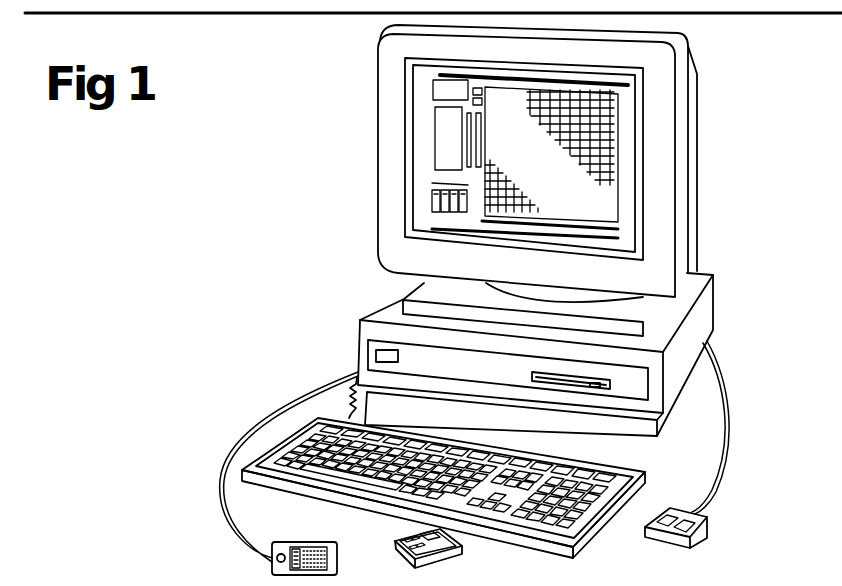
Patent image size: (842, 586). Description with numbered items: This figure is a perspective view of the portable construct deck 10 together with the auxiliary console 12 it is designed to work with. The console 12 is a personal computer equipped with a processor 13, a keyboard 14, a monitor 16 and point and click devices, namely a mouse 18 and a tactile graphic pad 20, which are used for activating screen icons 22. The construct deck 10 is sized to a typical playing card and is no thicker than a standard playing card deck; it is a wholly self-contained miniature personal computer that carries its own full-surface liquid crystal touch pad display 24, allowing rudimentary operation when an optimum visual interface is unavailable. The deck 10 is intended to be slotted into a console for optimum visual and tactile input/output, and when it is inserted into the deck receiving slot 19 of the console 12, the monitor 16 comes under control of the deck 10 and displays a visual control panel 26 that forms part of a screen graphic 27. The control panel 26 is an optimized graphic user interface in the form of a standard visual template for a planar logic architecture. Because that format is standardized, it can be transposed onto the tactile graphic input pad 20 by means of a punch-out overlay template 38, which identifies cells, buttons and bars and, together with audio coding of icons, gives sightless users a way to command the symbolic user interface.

The portable deck 10 is at (419, 552).
The console 12 is at (566, 355).
The processor 13 is at (693, 268).
The keyboard 14 is at (518, 540).
The monitor 16 is at (700, 148).
The mouse 18 is at (707, 527).
The deck receiving slot 19 is at (612, 383).
The graphic pad 20 is at (318, 545).
The screen icons 22 is at (430, 185).
The touch pad display 24 is at (402, 533).
The visual control panel 26 is at (627, 107).
The screen graphic 27 is at (440, 150).
The overlay template 38 is at (327, 552).